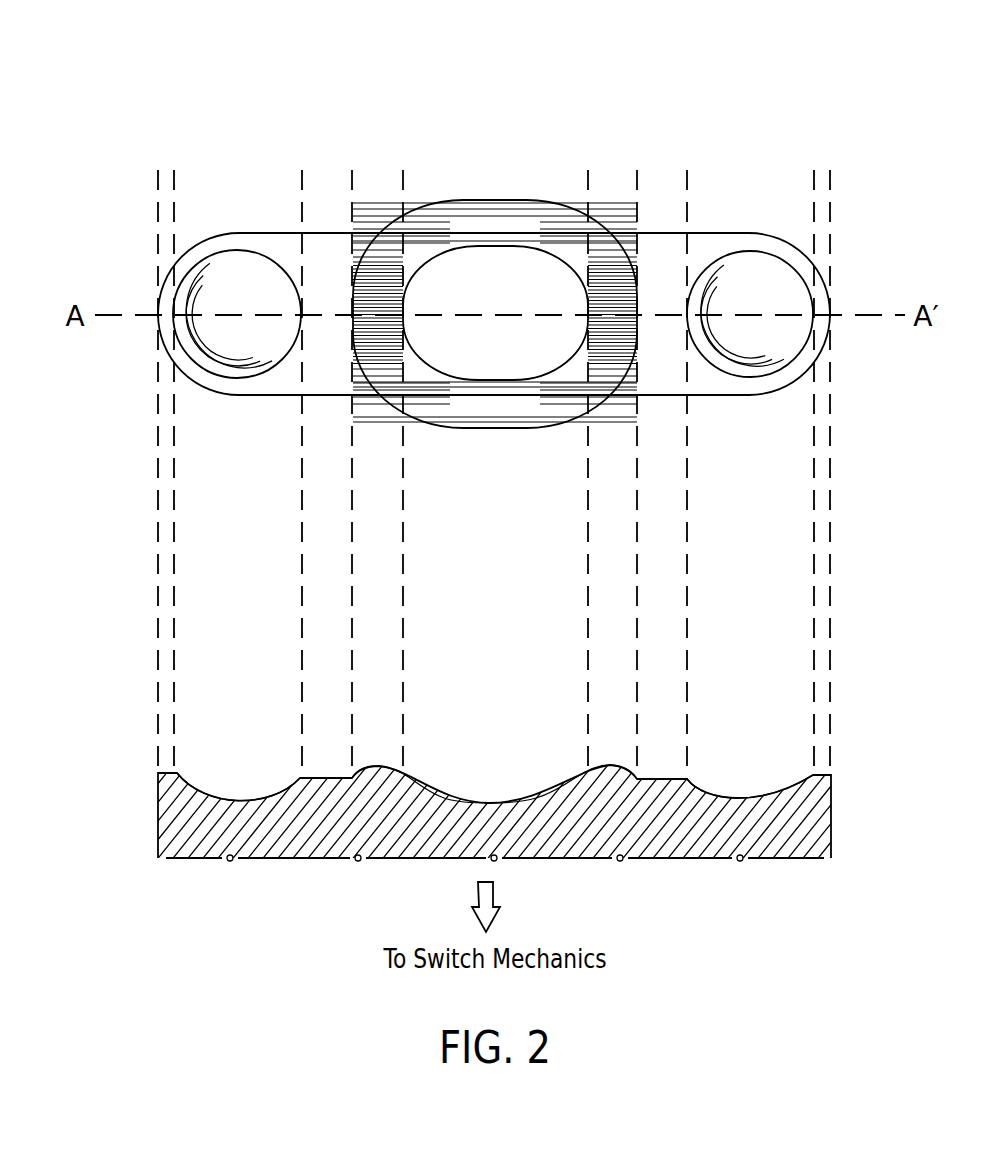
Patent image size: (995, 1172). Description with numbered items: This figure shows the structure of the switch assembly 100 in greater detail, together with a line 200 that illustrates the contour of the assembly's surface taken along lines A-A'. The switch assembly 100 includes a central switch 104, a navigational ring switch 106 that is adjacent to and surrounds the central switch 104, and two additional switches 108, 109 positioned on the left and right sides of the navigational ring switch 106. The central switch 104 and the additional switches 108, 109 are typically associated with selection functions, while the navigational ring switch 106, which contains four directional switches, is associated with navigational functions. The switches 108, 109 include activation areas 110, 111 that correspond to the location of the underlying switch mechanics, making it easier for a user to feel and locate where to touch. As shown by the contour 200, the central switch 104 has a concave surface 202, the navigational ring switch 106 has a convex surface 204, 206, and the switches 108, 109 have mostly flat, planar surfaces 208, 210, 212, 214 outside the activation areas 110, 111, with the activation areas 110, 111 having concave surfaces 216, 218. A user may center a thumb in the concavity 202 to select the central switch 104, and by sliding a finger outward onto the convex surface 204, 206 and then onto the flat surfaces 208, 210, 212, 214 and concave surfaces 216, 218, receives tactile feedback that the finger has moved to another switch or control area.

The switch assembly 100 is at (699, 56).
The central switch 104 is at (508, 265).
The navigational ring switch 106 is at (443, 228).
The additional switch 108 is at (326, 250).
The additional switch 109 is at (660, 253).
The activation area 110 is at (235, 270).
The activation area 111 is at (752, 268).
The line (contour) 200 is at (450, 770).
The concave surface 202 is at (505, 802).
The convex surface 204 is at (613, 765).
The convex surface 206 is at (377, 765).
The flat surface 208 is at (662, 780).
The flat surface 210 is at (335, 778).
The flat surface 212 is at (818, 775).
The flat surface 214 is at (167, 773).
The concave surface 216 is at (747, 800).
The concave surface 218 is at (233, 798).